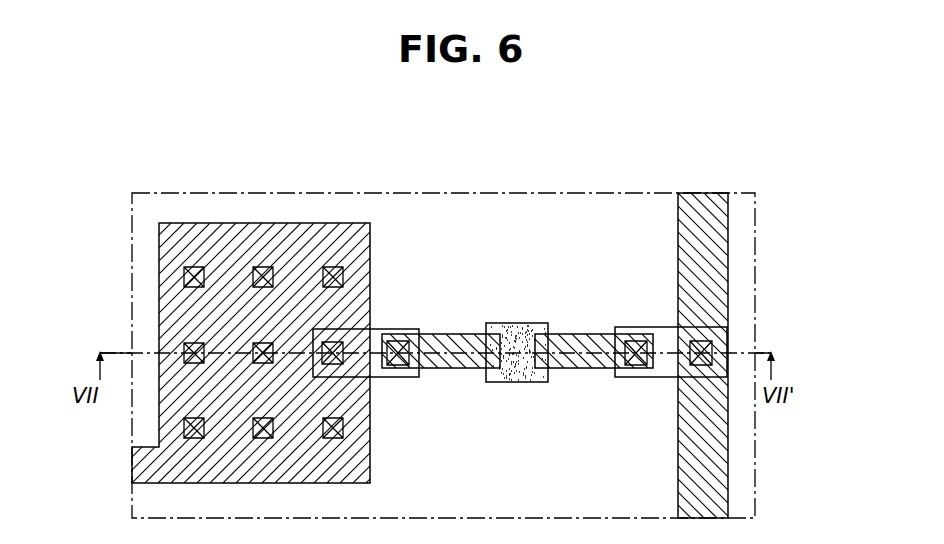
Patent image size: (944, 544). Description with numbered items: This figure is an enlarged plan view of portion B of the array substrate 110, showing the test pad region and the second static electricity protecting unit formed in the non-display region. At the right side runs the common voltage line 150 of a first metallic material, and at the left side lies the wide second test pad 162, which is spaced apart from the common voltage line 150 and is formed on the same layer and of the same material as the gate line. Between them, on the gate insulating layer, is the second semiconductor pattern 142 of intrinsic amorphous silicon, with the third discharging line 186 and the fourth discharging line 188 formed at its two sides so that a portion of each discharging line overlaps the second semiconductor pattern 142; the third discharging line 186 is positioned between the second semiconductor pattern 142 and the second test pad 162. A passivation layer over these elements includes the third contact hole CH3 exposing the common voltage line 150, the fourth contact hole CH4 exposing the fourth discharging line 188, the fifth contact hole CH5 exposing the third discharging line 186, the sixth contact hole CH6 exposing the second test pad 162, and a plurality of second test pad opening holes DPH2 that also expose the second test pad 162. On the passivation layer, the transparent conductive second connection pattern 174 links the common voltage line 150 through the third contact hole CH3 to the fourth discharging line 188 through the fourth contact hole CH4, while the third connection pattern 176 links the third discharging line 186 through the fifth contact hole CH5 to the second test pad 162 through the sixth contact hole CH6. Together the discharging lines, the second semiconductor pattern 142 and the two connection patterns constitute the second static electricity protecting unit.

The array substrate 110 is at (670, 505).
The second semiconductor pattern 142 is at (513, 327).
The common voltage line 150 is at (707, 221).
The second test pad 162 is at (290, 232).
The second connection pattern 174 is at (377, 372).
The third connection pattern 176 is at (668, 372).
The third discharging line 186 is at (455, 337).
The fourth discharging line 188 is at (580, 337).
The B portion B is at (470, 193).
The second test pad opening holes DPH2 is at (186, 338).
The third contact hole CH3 is at (712, 334).
The fourth contact hole CH4 is at (636, 332).
The fifth contact hole CH5 is at (401, 332).
The sixth contact hole CH6 is at (337, 332).